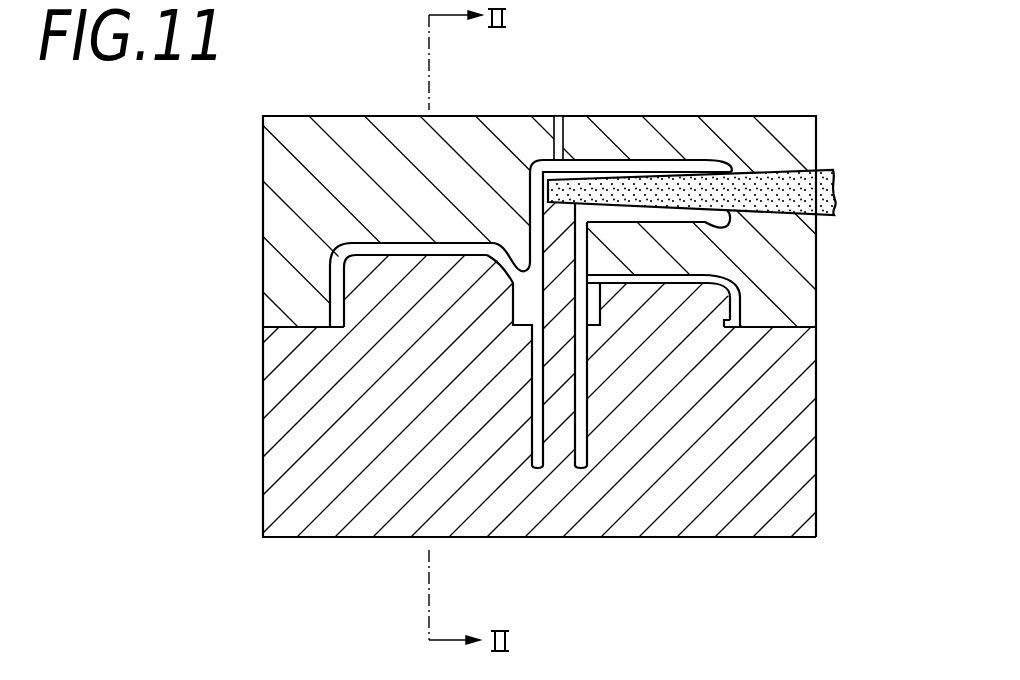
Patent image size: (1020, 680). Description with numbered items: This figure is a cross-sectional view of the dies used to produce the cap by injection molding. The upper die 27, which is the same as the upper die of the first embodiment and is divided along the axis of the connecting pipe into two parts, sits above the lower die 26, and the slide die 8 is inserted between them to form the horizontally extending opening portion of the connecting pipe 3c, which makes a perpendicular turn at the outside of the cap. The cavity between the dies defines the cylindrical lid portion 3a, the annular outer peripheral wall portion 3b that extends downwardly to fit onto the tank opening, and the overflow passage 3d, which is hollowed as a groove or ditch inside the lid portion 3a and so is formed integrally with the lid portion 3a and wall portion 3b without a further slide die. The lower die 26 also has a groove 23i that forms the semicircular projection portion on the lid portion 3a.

The lid portion 3a is at (727, 265).
The annular outer peripheral wall portion 3b is at (743, 303).
The connecting pipe 3c is at (633, 158).
The overflow passage 3d is at (387, 243).
The slide die 8 is at (823, 200).
The groove 23i is at (717, 327).
The lower die 26 is at (690, 538).
The upper die 27 is at (503, 116).